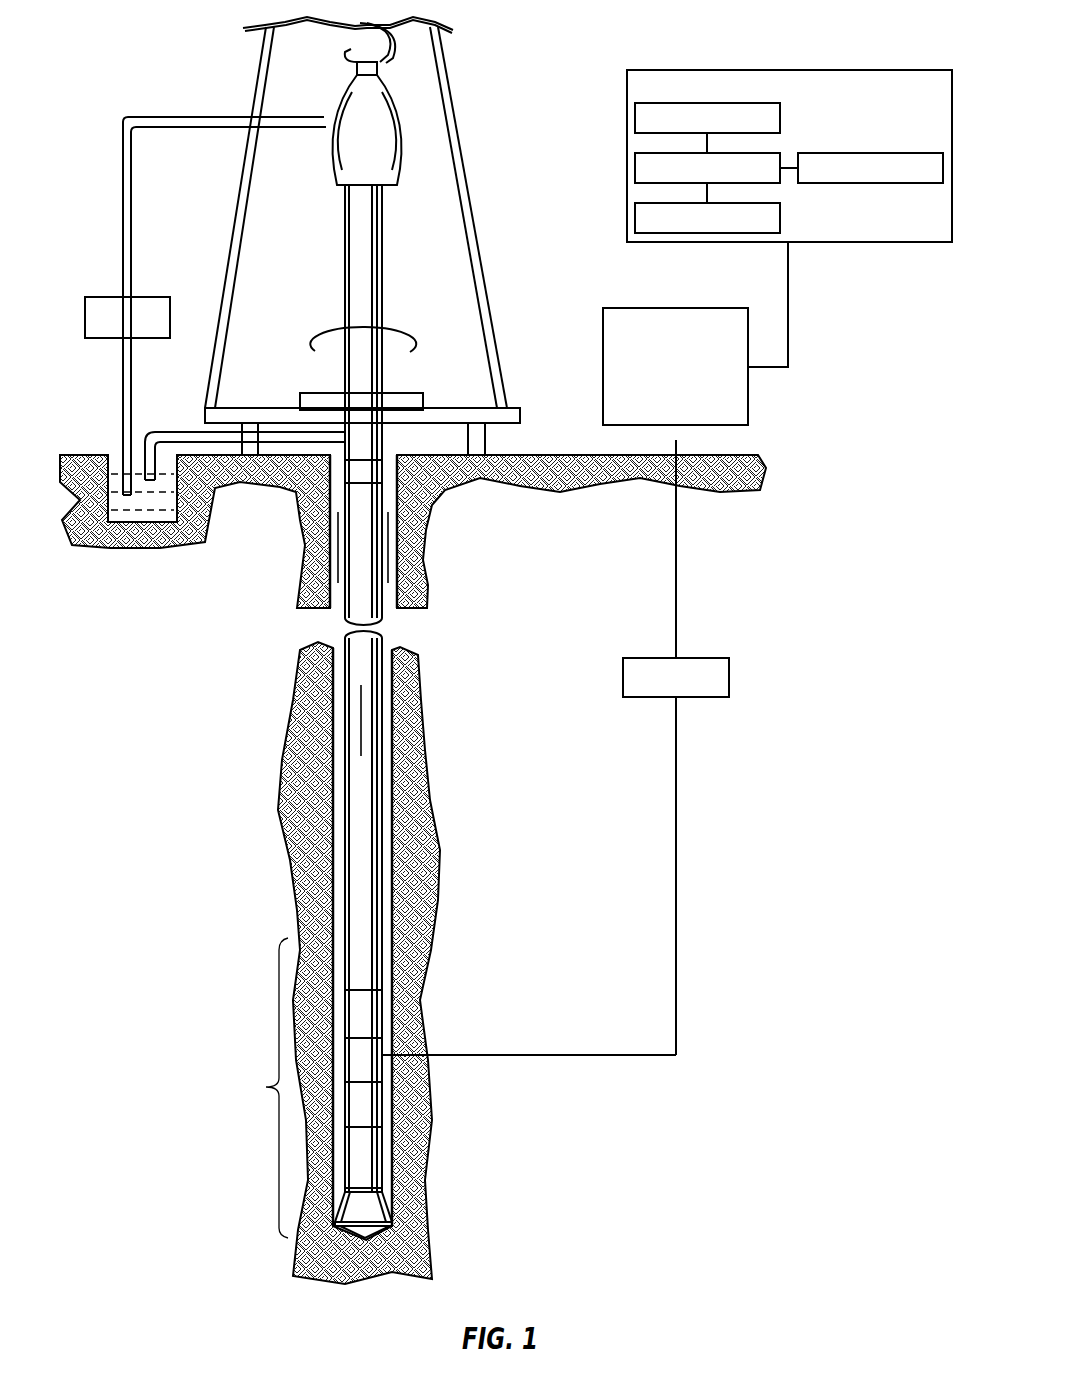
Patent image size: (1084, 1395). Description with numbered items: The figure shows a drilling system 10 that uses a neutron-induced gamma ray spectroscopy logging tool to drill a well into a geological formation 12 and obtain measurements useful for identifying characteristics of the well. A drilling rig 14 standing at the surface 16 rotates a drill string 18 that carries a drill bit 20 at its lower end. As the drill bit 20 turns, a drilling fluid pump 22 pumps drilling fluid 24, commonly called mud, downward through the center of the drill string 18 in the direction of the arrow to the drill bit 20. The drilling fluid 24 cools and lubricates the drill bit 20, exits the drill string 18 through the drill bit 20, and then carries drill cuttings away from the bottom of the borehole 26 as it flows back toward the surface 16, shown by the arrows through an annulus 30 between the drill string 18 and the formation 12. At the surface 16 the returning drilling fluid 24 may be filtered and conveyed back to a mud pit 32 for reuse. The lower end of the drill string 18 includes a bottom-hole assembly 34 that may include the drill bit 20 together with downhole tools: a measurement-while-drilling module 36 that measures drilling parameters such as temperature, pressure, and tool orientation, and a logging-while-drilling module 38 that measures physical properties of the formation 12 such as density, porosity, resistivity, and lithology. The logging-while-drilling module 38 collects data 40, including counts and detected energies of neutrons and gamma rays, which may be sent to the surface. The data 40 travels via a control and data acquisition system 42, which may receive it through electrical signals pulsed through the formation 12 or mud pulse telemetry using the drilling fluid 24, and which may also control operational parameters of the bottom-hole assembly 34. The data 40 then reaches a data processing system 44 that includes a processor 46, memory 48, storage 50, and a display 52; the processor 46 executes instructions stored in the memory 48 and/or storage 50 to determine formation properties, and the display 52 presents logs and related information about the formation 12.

The drilling system 10 is at (589, 28).
The geological formation 12 is at (562, 837).
The drilling rig 14 is at (493, 136).
The surface 16 is at (560, 448).
The drill string 18 is at (360, 440).
The drill bit 20 is at (368, 1217).
The drilling fluid pump 22 is at (84, 313).
The drilling fluid 24 is at (335, 548).
The borehole 26 is at (327, 863).
The annulus 30 is at (390, 445).
The mud pit 32 is at (140, 516).
The bottom-hole assembly 34 is at (264, 1087).
The measurement-while-drilling module 36 is at (368, 1015).
The logging-while-drilling module 38 is at (367, 1102).
The data 40 is at (712, 658).
The control and data acquisition system 42 is at (676, 308).
The data processing system 44 is at (790, 70).
The processor 46 is at (762, 153).
The memory 48 is at (635, 118).
The storage 50 is at (782, 215).
The display 52 is at (870, 153).